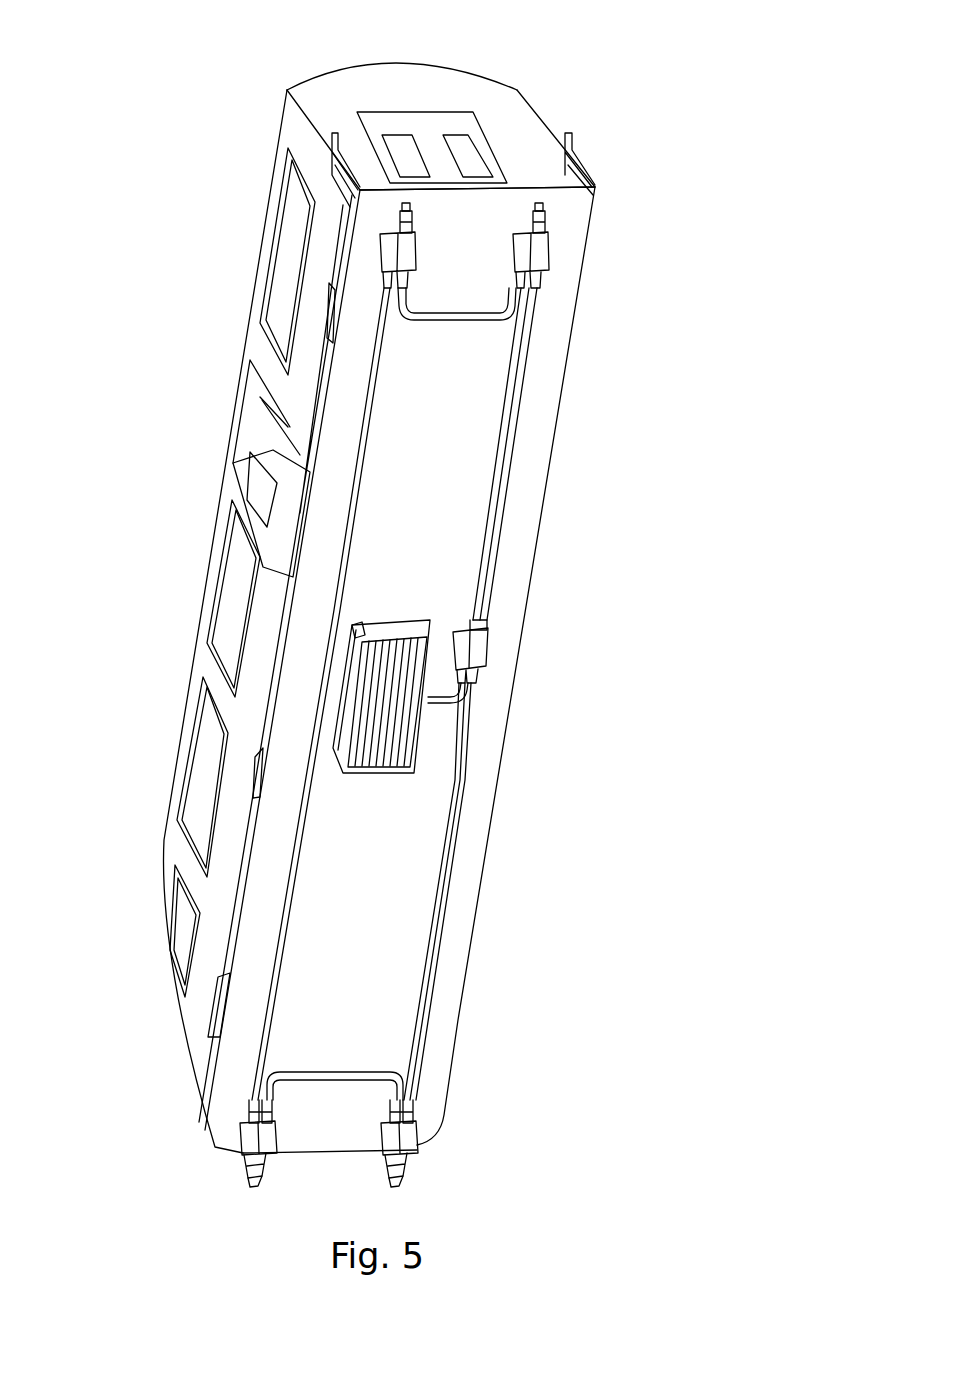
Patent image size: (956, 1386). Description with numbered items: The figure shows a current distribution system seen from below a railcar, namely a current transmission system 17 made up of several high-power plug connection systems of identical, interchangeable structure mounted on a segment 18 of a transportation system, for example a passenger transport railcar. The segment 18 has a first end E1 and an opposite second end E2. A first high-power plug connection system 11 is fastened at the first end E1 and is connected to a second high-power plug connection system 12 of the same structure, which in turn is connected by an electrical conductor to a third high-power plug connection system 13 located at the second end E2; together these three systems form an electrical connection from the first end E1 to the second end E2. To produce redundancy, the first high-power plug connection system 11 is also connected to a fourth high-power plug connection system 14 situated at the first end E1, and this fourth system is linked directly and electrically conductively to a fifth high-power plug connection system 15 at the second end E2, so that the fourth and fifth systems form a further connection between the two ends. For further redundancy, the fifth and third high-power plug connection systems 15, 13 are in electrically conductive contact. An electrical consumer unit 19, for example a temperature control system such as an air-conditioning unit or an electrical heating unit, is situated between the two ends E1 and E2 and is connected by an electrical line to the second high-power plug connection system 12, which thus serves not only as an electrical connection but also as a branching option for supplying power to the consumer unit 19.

The segment of a transportation system 18 is at (158, 331).
The current transmission system 17 is at (572, 391).
The electrical consumer unit 19 is at (383, 780).
The first high-power plug connection system 11 is at (540, 258).
The second high-power plug connection system 12 is at (480, 657).
The third high-power plug connection system 13 is at (412, 1137).
The fourth high-power plug connection system 14 is at (393, 255).
The fifth high-power plug connection system 15 is at (243, 1130).
The first end E1 is at (553, 101).
The second end E2 is at (500, 1095).